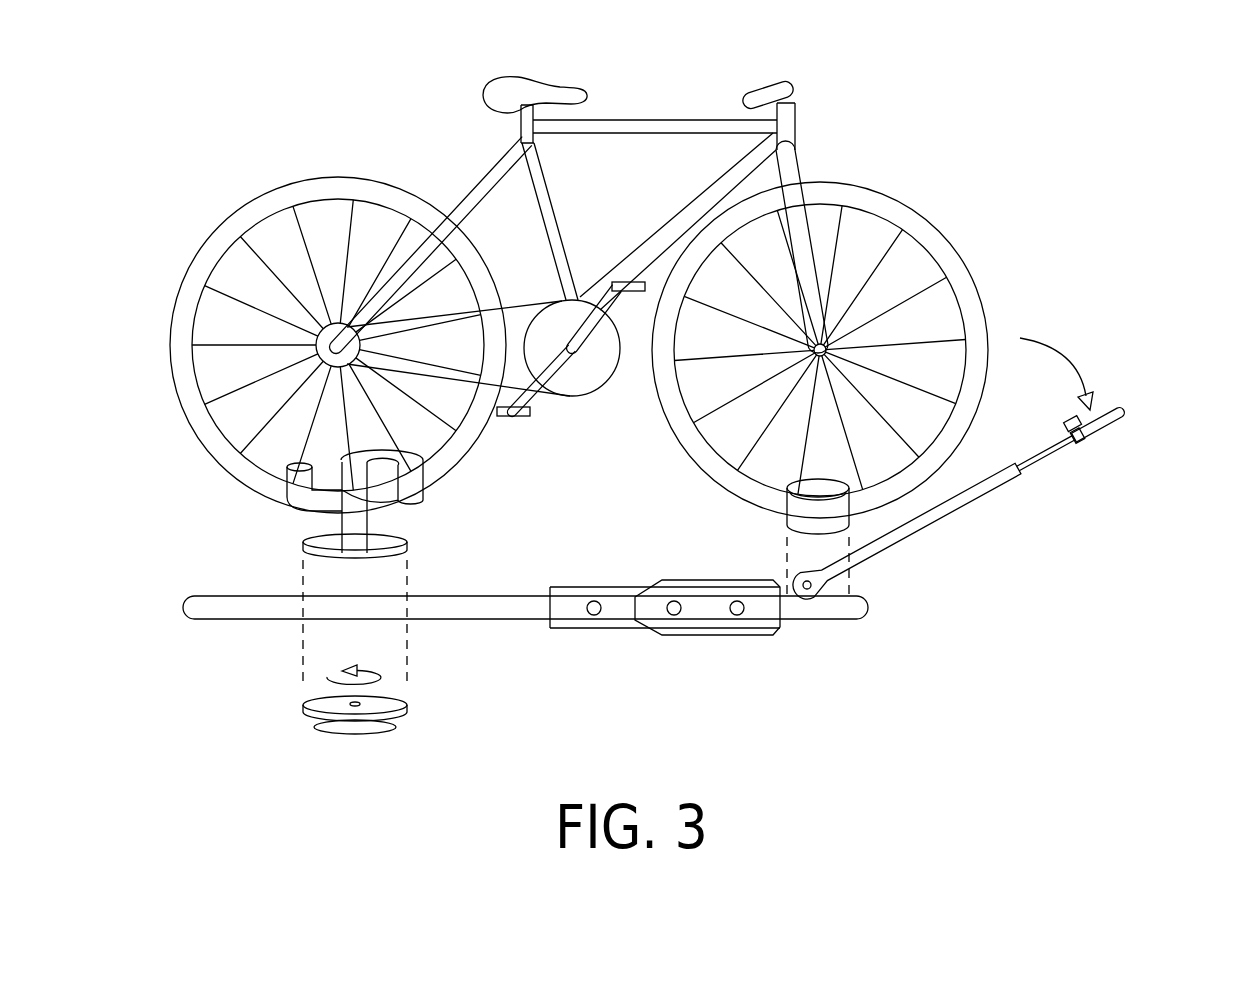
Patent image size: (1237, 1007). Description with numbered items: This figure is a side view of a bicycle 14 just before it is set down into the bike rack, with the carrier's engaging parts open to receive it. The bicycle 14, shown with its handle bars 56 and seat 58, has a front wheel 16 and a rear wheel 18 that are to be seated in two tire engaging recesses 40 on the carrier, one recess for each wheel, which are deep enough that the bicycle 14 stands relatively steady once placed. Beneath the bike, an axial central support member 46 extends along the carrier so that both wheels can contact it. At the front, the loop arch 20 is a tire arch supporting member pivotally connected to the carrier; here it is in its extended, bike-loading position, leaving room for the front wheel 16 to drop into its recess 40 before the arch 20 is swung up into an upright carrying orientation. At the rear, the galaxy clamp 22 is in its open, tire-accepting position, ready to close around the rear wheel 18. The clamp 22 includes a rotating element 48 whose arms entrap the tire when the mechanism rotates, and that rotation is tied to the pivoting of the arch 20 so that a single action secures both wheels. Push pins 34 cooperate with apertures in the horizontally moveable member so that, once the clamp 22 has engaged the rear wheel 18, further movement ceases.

The bicycle 14 is at (677, 127).
The front wheel 16 is at (927, 240).
The rear wheel 18 is at (235, 222).
The loop arch 20 is at (1098, 425).
The galaxy clamp 22 is at (337, 543).
The push pins 34 is at (598, 612).
The tire engaging recesses 40 is at (788, 493).
The axial central support member 46 is at (528, 620).
The rotating element 48 is at (327, 707).
The handle bars 56 is at (786, 90).
The seat 58 is at (552, 92).